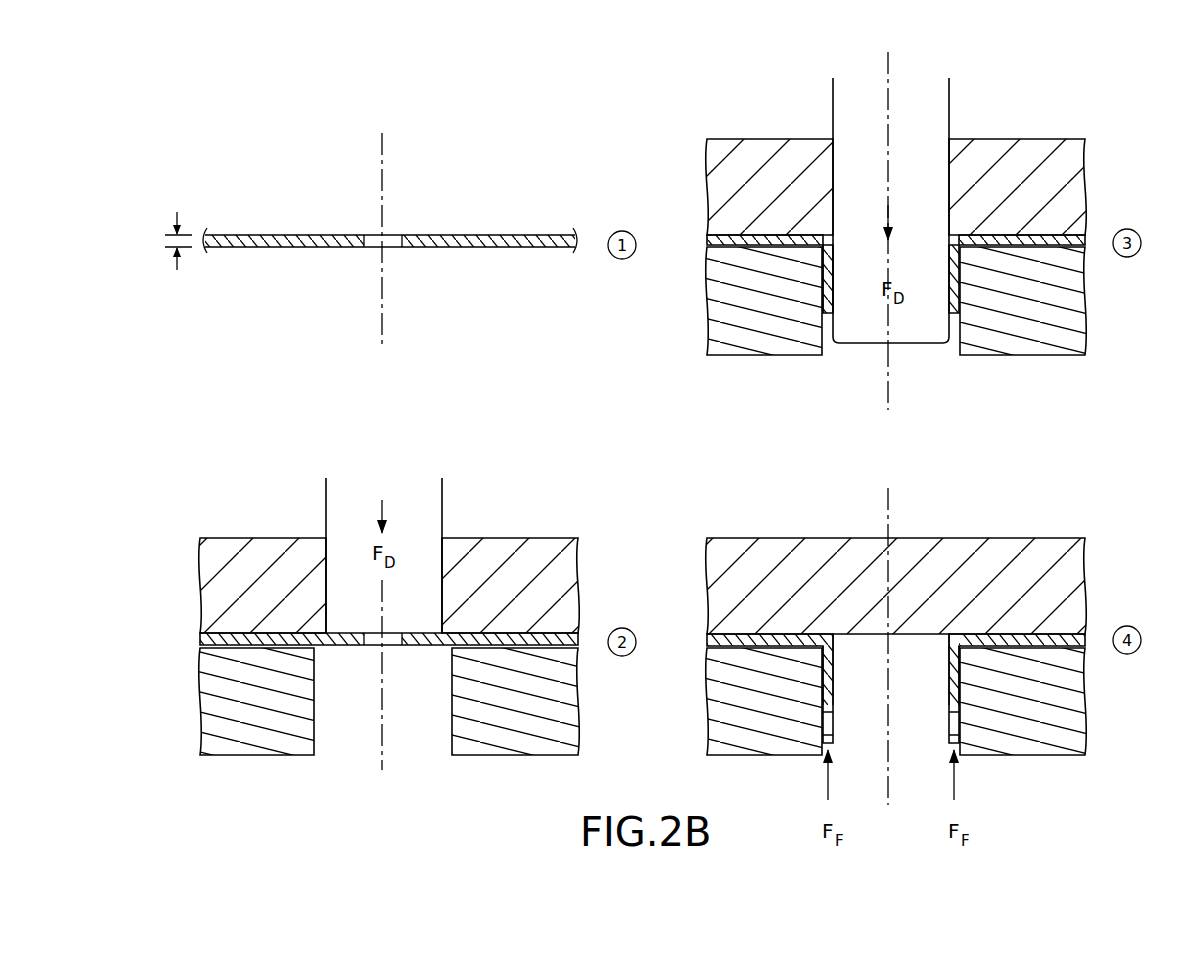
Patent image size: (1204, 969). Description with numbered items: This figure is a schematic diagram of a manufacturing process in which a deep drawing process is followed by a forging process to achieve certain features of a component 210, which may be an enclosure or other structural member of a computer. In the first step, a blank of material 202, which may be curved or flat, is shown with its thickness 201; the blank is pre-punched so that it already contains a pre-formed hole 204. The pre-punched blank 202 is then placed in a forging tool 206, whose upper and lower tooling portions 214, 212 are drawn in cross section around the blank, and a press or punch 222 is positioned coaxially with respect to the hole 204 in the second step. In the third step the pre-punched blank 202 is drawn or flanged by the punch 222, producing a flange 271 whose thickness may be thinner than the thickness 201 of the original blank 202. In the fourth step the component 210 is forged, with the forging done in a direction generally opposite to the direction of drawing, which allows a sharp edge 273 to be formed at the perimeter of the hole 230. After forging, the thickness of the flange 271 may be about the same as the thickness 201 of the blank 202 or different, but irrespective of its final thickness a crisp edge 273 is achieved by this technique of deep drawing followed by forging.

The thickness 201 is at (169, 243).
The blank of material 202 is at (238, 235).
The pre-formed hole 204 is at (398, 220).
The component 210 is at (553, 226).
The forging tool 206 is at (558, 532).
The upper die left portion (blank holder) 214 is at (281, 602).
The lower die 212 is at (280, 717).
The punch 222 is at (440, 532).
The flange 271 is at (833, 302).
The hole 230 is at (870, 393).
The sharp edge 273 is at (837, 630).